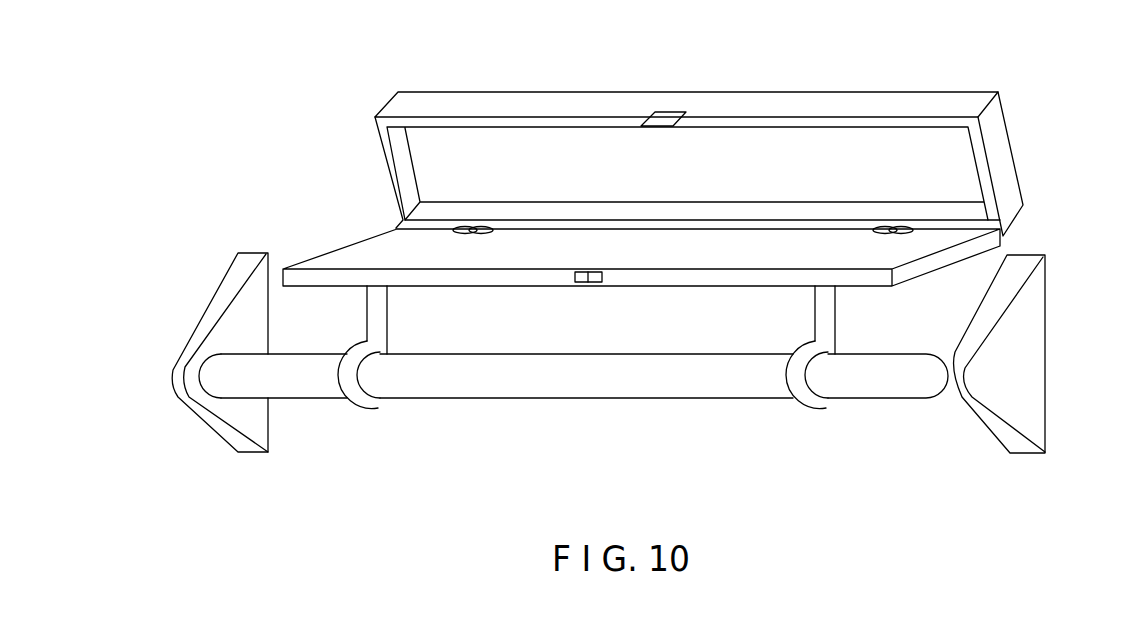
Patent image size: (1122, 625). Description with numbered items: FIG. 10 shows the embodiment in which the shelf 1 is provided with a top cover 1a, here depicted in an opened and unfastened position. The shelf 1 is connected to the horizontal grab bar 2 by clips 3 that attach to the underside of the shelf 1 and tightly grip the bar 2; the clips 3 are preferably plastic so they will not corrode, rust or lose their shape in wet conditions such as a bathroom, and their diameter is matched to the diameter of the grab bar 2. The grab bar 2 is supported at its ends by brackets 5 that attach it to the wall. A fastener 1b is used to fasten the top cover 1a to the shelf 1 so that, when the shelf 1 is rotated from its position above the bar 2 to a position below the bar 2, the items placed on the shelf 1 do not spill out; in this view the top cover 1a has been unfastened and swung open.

The shelf 1 is at (996, 243).
The top cover 1a is at (953, 103).
The fastener 1b is at (662, 115).
The grab bar 2 is at (570, 389).
The clip 3 is at (357, 400).
The bracket 5 is at (207, 422).